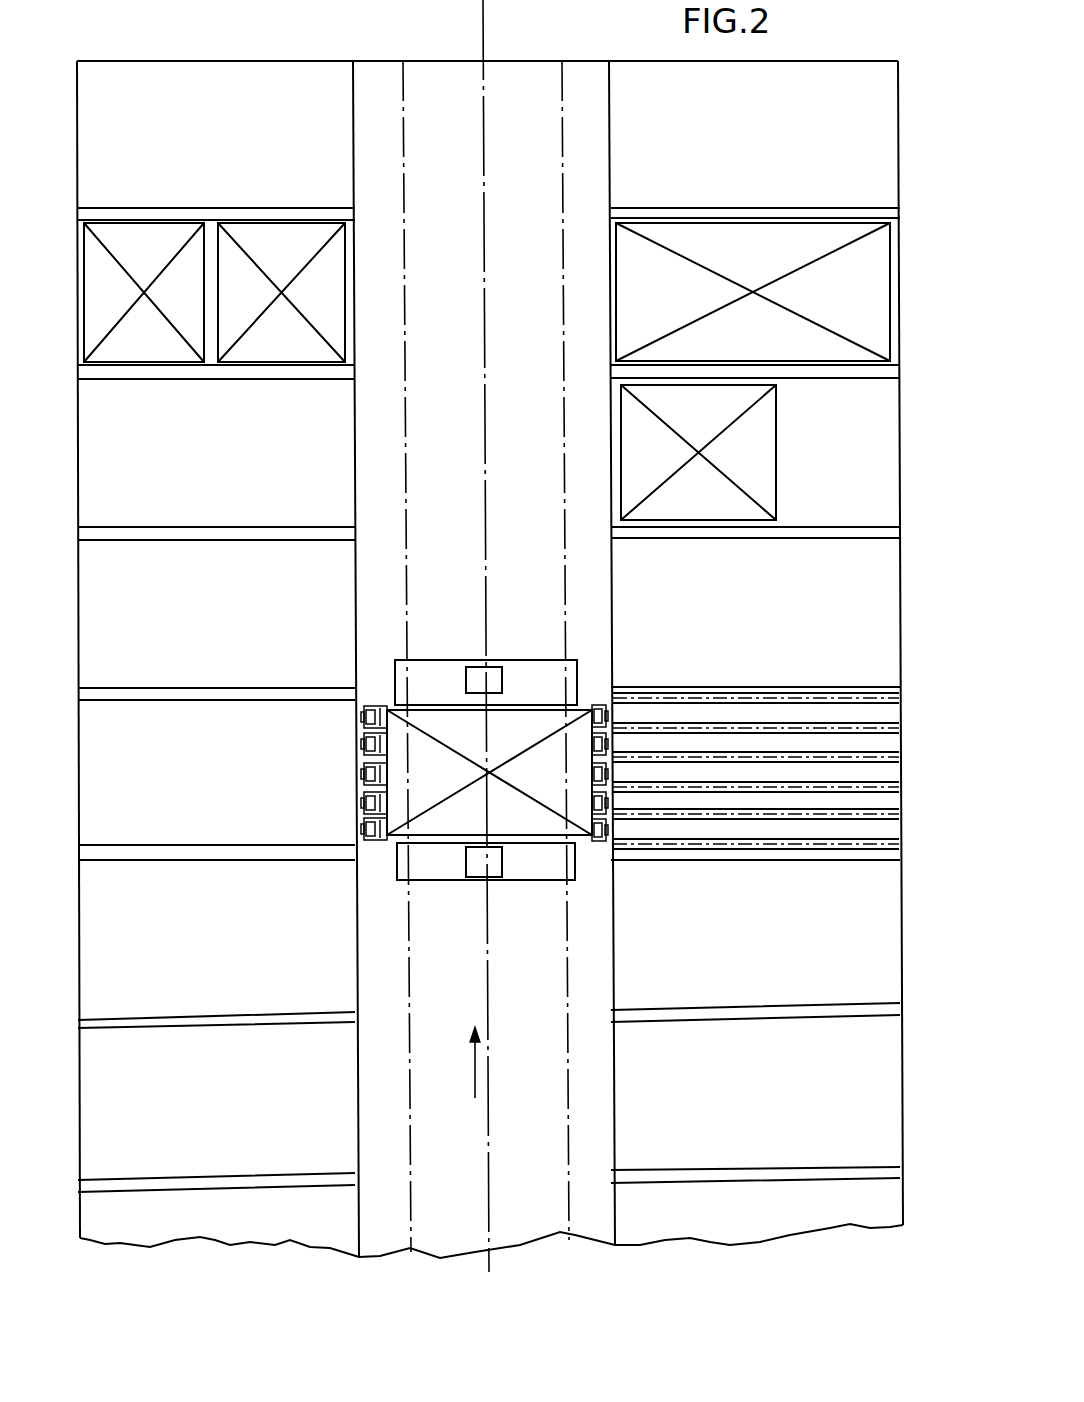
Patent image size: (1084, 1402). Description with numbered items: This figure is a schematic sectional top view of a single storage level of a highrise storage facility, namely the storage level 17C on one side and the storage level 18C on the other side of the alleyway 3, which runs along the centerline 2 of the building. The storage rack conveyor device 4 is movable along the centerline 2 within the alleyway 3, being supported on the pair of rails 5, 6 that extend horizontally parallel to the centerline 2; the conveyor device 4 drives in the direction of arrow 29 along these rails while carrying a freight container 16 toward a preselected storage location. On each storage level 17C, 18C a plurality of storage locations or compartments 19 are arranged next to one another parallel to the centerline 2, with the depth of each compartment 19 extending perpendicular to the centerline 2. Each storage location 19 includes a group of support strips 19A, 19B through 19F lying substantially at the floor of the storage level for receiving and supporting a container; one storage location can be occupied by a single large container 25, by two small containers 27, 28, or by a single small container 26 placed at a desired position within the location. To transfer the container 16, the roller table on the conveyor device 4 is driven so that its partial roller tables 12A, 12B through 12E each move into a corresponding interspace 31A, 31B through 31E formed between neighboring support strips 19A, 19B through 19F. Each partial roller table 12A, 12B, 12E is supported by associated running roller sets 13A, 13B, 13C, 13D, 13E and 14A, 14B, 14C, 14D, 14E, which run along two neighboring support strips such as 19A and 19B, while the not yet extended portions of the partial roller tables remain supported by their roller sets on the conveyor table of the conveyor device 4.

The centerline 2 is at (500, 1152).
The alleyway 3 is at (536, 73).
The storage rack conveyor device 4 is at (516, 652).
The rail 5 is at (563, 163).
The rail 6 is at (404, 163).
The partial roller table 12A is at (362, 829).
The partial roller table 12B is at (362, 801).
The partial roller table 12E is at (362, 717).
The running roller set 13A is at (368, 840).
The running roller set 13B is at (615, 857).
The running roller set 13C is at (606, 778).
The running roller set 13D is at (592, 715).
The running roller set 13E is at (362, 730).
The running roller set 14A is at (388, 815).
The running roller set 14B is at (360, 790).
The running roller set 14C is at (604, 735).
The running roller set 14D is at (615, 712).
The running roller set 14E is at (362, 703).
The freight container 16 is at (443, 833).
The storage level 17C is at (852, 1218).
The storage level 18C is at (128, 1233).
The storage location 19 is at (908, 756).
The support strip 19A is at (898, 846).
The support strip 19B is at (910, 803).
The support strip 19F is at (902, 697).
The large container 25 is at (880, 257).
The small container 26 is at (767, 441).
The small container 27 is at (327, 349).
The small container 28 is at (165, 236).
The arrow 29 is at (455, 1066).
The interspace 31A is at (758, 830).
The interspace 31B is at (867, 800).
The interspace 31E is at (718, 710).